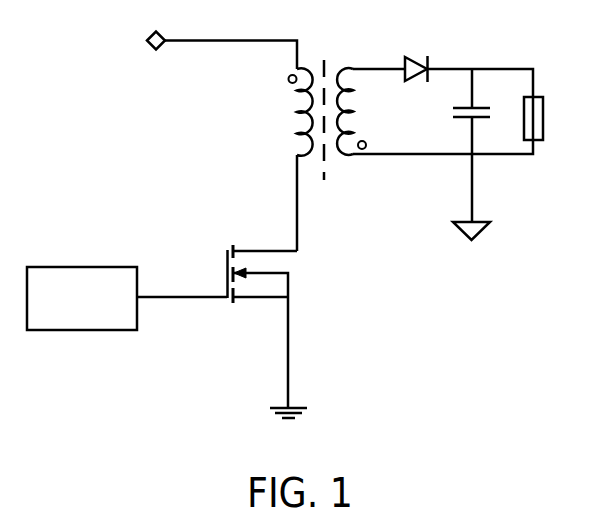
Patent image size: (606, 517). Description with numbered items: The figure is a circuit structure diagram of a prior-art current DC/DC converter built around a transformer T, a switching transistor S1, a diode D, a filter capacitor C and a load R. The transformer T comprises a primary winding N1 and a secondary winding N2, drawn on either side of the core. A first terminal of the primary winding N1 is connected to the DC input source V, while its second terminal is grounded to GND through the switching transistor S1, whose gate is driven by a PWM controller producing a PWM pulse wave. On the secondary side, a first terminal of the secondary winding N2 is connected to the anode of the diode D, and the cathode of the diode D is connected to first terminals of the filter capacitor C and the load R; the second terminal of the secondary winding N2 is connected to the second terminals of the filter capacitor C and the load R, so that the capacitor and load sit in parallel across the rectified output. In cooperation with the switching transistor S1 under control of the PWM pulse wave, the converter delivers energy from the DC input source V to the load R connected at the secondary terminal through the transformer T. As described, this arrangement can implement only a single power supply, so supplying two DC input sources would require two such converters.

The DC input source V is at (206, 48).
The transformer T is at (327, 105).
The primary winding N1 is at (285, 159).
The secondary winding N2 is at (363, 111).
The diode D is at (416, 53).
The filter capacitor C is at (465, 154).
The load R is at (545, 119).
The switching transistor S1 is at (217, 326).
The PWM pulse wave PWM is at (82, 298).
The ground GND is at (285, 429).